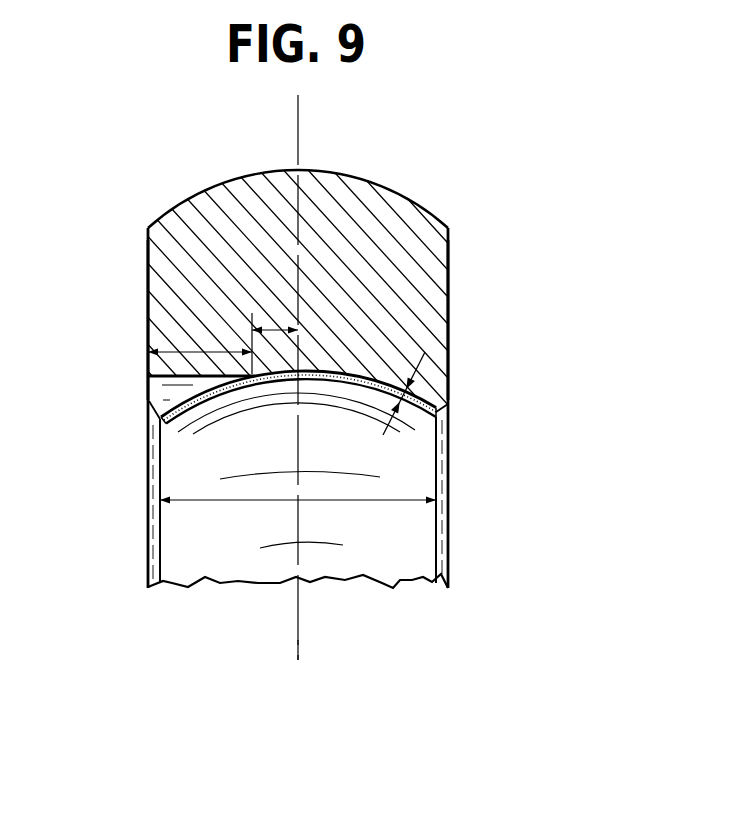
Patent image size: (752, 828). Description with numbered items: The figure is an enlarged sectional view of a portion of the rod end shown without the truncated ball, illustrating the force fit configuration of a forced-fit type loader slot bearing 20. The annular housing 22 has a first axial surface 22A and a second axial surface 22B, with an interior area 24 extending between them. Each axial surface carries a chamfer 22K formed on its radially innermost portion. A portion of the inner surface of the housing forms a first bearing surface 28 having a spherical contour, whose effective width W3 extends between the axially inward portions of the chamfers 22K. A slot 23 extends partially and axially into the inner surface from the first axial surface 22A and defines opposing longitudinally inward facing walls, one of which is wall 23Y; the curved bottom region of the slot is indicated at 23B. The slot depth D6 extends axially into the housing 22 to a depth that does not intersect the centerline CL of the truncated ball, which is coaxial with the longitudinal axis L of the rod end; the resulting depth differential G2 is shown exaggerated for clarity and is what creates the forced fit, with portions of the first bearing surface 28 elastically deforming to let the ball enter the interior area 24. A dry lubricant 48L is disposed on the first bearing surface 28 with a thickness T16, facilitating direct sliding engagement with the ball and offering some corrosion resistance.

The loader slot bearing 20 is at (463, 180).
The annular housing 22 is at (167, 250).
The first axial surface 22A is at (148, 287).
The second axial surface 22B is at (448, 284).
The chamfer 22K is at (447, 405).
The slot 23 is at (148, 396).
The curved bottom surface of recess 23B is at (323, 382).
The longitudinally inward facing wall 23Y is at (247, 390).
The interior area 24 is at (190, 543).
The first bearing surface 28 is at (370, 389).
The dry lubricant 48L is at (415, 430).
The depth of the slot D6 is at (209, 352).
The depth differential G2 is at (272, 330).
The thickness of the dry lubricant T16 is at (428, 358).
The effective width W3 is at (247, 500).
The longitudinal axis L is at (300, 98).
The centerline CL is at (298, 655).